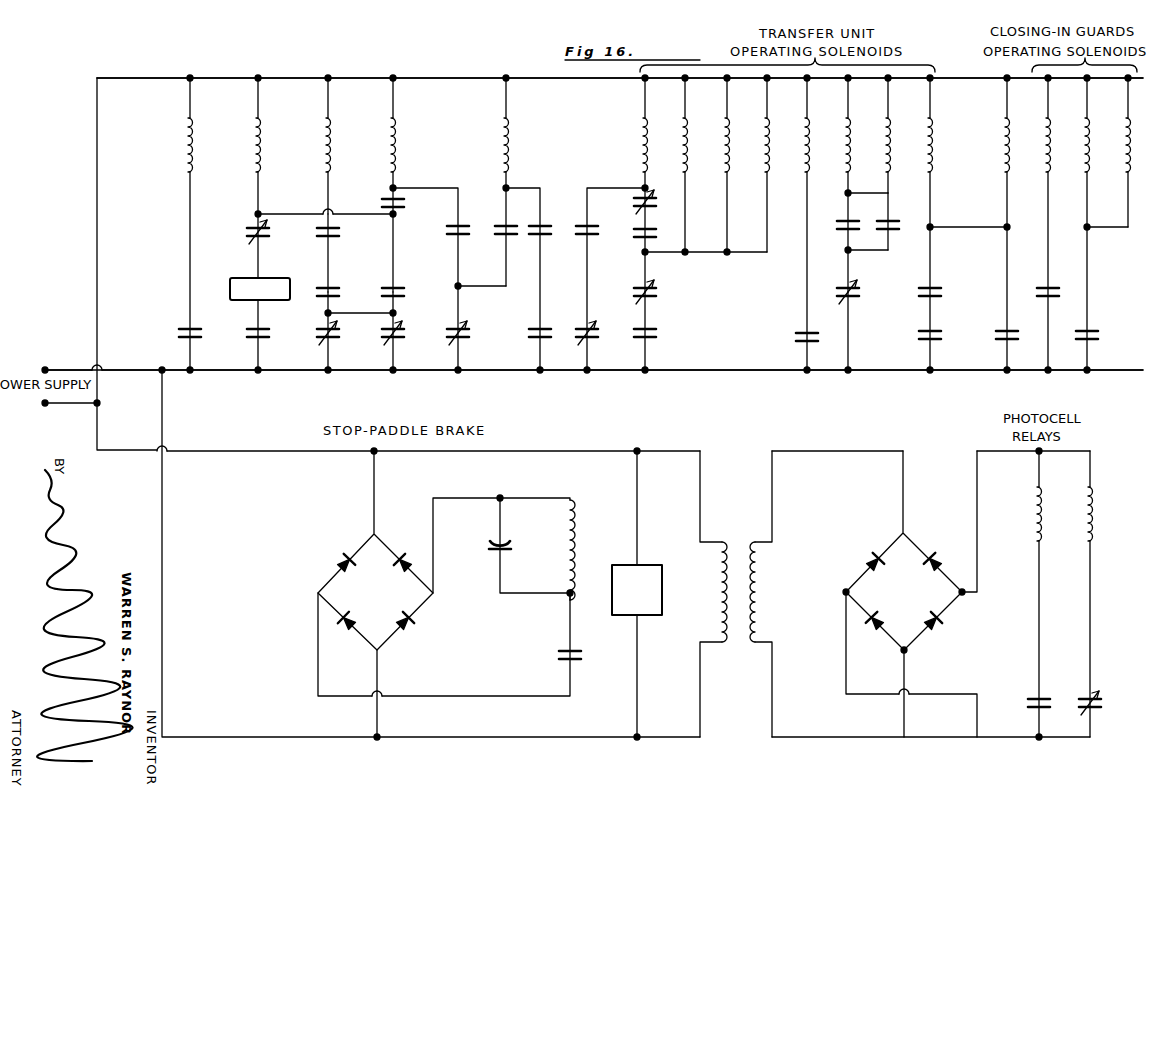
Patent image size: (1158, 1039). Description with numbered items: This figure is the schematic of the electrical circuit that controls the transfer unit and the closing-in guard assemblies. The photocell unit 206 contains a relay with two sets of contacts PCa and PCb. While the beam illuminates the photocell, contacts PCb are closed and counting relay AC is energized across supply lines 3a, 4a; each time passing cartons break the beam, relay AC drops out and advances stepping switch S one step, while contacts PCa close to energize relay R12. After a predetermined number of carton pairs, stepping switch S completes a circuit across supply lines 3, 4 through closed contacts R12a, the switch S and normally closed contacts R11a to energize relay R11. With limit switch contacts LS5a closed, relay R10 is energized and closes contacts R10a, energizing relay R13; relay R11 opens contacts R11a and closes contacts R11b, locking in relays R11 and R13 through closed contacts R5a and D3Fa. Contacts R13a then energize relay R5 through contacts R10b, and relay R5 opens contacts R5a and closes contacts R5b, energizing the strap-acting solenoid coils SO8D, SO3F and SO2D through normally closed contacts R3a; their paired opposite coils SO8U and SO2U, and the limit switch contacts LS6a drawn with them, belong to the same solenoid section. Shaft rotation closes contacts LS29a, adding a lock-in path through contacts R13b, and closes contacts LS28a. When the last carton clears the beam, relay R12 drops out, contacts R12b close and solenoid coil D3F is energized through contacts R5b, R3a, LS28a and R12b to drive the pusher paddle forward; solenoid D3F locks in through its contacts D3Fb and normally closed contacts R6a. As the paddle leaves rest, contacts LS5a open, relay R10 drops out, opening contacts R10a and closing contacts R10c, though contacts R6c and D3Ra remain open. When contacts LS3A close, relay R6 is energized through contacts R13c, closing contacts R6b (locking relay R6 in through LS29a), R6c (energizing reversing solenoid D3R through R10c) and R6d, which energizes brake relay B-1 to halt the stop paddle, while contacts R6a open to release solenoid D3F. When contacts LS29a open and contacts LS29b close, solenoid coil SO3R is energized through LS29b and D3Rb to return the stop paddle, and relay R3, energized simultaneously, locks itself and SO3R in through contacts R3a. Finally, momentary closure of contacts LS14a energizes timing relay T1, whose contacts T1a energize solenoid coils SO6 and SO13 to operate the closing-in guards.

The power supply conductor 3 is at (163, 378).
The power supply conductor 4 is at (183, 451).
The photocell relay conductor 3a is at (1004, 746).
The photocell relay conductor 4a is at (1002, 447).
The brake rectifier unit 206 is at (653, 599).
The start switch S is at (230, 285).
The brake coil B-1 is at (529, 545).
The relay R10 is at (173, 224).
The relay R11 is at (245, 146).
The relay R5 is at (315, 146).
The relay R13 is at (377, 133).
The relay R6 is at (493, 133).
The relay R3 is at (997, 224).
The relay R12 is at (1022, 594).
The relay T1 is at (1038, 224).
The AC relay AC is at (1077, 594).
The solenoid D3F is at (635, 133).
The solenoid SO8D is at (675, 165).
The solenoid SO3F is at (717, 165).
The solenoid SO2D is at (757, 165).
The solenoid SO2U is at (797, 224).
The solenoid D3R is at (838, 135).
The solenoid SO8U is at (878, 135).
The solenoid SO3R is at (920, 152).
The solenoid SO6 is at (1077, 224).
The solenoid SO13 is at (1118, 152).
The limit switch contact LS5a is at (170, 333).
The relay contact R11a is at (242, 246).
The relay contact R12a is at (247, 335).
The relay contact R10b is at (346, 253).
The relay contact R13a is at (342, 284).
The relay contact R5a is at (318, 331).
The relay contact R10a is at (410, 240).
The relay contact R11b is at (407, 284).
The contact D3Fa is at (381, 331).
The relay contact R13b is at (431, 237).
The limit switch contact LS29a is at (474, 328).
The relay contact R6b is at (496, 237).
The relay contact R13c is at (541, 279).
The limit switch contact LS3A is at (525, 327).
The contact D3Fb is at (610, 279).
The relay contact R6a is at (596, 340).
The relay contact R12b is at (659, 240).
The limit switch contact LS28a is at (655, 237).
The relay contact R3a is at (826, 319).
The relay contact R5b is at (656, 331).
The limit switch contact LS6a is at (791, 346).
The relay contact R6c is at (837, 242).
The contact D3Ra is at (902, 221).
The relay contact R10c is at (863, 325).
The contact D3Rb is at (945, 298).
The limit switch contact LS29b is at (909, 345).
The limit switch contact LS14a is at (1061, 291).
The relay contact T1a is at (1098, 345).
The relay contact R6d is at (460, 644).
The photocell contact PCa is at (1028, 711).
The photocell contact PCb is at (1100, 707).